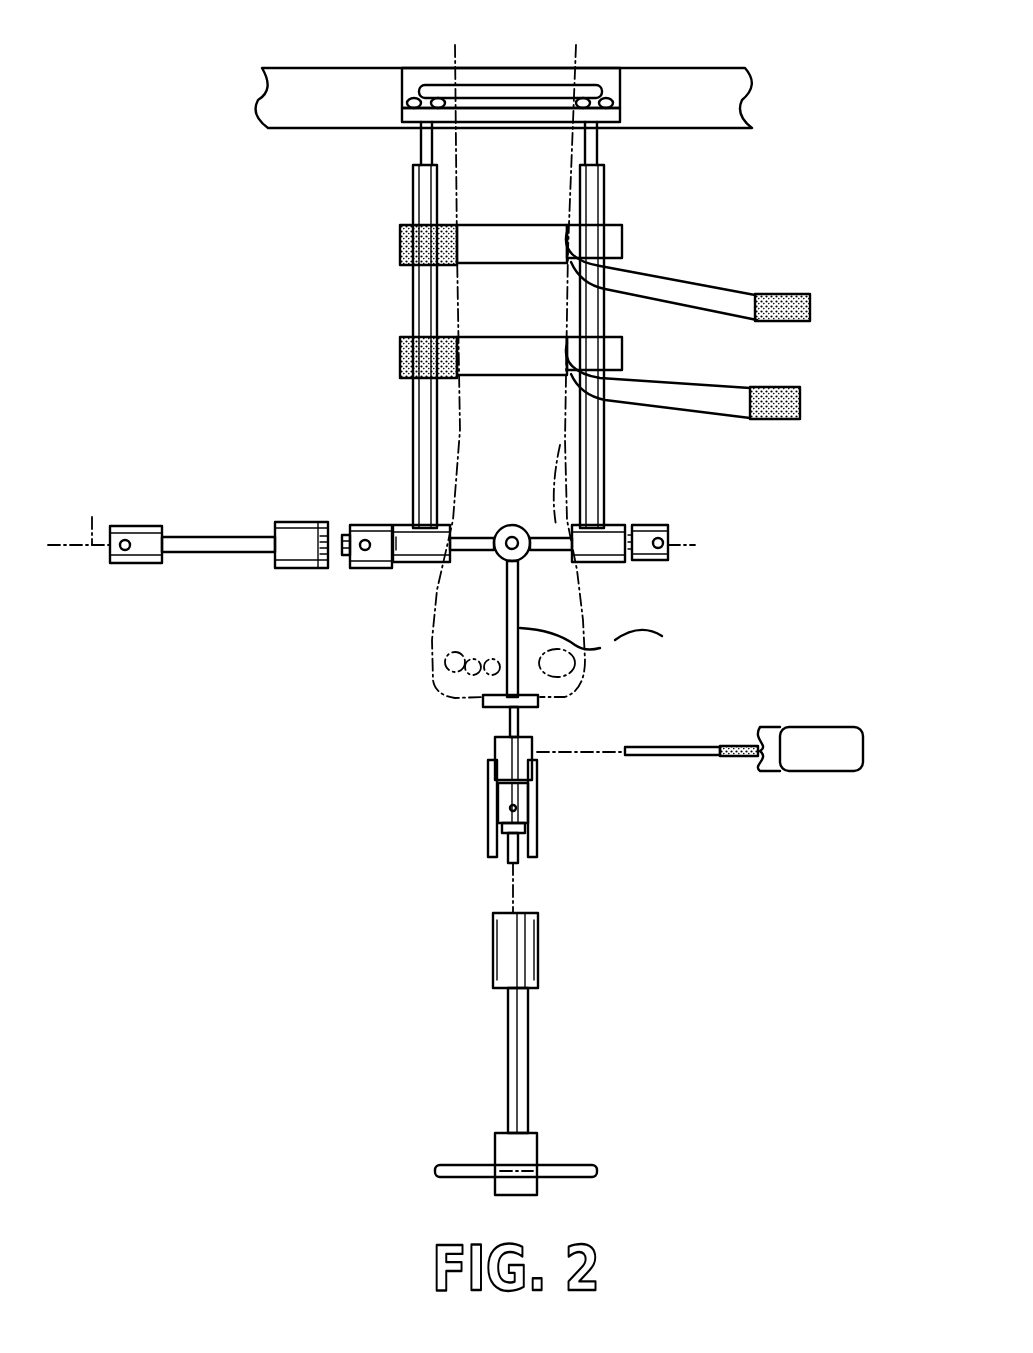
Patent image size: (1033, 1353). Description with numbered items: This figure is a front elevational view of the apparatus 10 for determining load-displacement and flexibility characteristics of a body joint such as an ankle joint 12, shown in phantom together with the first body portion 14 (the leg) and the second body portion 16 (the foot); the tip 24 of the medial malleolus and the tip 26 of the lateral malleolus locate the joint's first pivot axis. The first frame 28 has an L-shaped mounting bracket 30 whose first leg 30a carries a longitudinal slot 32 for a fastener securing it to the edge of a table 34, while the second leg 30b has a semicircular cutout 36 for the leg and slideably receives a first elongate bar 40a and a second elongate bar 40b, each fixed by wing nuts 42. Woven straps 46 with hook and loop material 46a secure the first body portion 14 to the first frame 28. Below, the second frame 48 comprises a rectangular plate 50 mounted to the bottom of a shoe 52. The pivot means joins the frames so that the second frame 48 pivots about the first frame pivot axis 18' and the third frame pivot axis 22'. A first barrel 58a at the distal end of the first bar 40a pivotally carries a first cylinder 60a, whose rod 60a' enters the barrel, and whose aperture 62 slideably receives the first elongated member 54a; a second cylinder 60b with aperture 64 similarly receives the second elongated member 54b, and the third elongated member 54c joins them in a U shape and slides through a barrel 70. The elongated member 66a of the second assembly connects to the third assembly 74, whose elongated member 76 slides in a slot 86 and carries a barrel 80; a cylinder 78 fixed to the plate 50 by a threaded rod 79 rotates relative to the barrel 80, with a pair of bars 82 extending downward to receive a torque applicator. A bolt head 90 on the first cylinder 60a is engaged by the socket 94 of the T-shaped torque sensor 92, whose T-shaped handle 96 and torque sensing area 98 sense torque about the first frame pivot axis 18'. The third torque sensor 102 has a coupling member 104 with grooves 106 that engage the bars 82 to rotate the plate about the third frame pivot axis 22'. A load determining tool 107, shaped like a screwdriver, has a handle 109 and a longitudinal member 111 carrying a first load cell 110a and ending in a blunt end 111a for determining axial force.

The apparatus 10 is at (758, 166).
The ankle joint 12 is at (490, 520).
The first body portion 14 is at (458, 446).
The second body portion 16 is at (562, 634).
The first frame pivot axis 18' is at (91, 511).
The third frame pivot axis 22' is at (480, 887).
The tip of the medial malleolus 24 is at (598, 506).
The tip of the lateral malleolus 26 is at (418, 502).
The first frame 28 is at (612, 178).
The mounting bracket 30 is at (412, 76).
The first leg 30a is at (607, 76).
The second leg 30b is at (622, 116).
The longitudinal slot 32 is at (502, 88).
The table 34 is at (314, 68).
The semicircular cutout 36 is at (492, 113).
The first elongate bar 40a is at (413, 212).
The second elongate bar 40b is at (605, 216).
The wing nut 42 is at (408, 101).
The woven strap 46 is at (688, 290).
The hook and loop material 46a is at (400, 242).
The second frame 48 is at (420, 695).
The rectangular plate 50 is at (535, 698).
The shoe 52 is at (609, 642).
The first elongated member 54a is at (352, 556).
The second elongated member 54b is at (665, 541).
The third elongated member 54c is at (543, 533).
The first barrel 58a is at (421, 566).
The first cylinder 60a is at (346, 488).
The rod 60a' is at (397, 587).
The second cylinder 60b is at (668, 560).
The aperture 62 is at (372, 567).
The aperture 64 is at (641, 527).
The elongated member 66a is at (590, 655).
The barrel 70 is at (505, 562).
The third assembly 74 is at (520, 808).
The elongated member 76 is at (527, 829).
The cylinder 78 is at (495, 745).
The threaded rod 79 is at (522, 715).
The barrel 80 is at (492, 826).
The bars 82 is at (488, 781).
The slot 86 is at (520, 861).
The bolt head 90 is at (345, 535).
The torque sensor 92 is at (160, 528).
The socket 94 is at (293, 569).
The T-shaped handle 96 is at (148, 565).
The torque sensing area 98 is at (222, 552).
The third torque sensor 102 is at (528, 1041).
The coupling member 104 is at (540, 986).
The grooves 106 is at (493, 943).
The load determining tool 107 is at (712, 730).
The handle 109 is at (822, 740).
The first load cell 110a is at (722, 758).
The longitudinal member 111 is at (648, 747).
The blunt end 111a is at (622, 758).